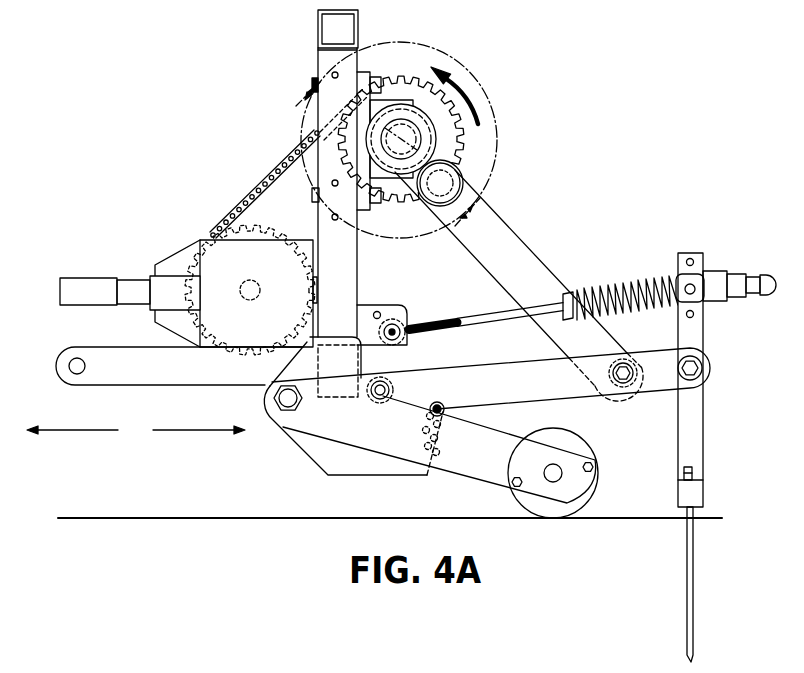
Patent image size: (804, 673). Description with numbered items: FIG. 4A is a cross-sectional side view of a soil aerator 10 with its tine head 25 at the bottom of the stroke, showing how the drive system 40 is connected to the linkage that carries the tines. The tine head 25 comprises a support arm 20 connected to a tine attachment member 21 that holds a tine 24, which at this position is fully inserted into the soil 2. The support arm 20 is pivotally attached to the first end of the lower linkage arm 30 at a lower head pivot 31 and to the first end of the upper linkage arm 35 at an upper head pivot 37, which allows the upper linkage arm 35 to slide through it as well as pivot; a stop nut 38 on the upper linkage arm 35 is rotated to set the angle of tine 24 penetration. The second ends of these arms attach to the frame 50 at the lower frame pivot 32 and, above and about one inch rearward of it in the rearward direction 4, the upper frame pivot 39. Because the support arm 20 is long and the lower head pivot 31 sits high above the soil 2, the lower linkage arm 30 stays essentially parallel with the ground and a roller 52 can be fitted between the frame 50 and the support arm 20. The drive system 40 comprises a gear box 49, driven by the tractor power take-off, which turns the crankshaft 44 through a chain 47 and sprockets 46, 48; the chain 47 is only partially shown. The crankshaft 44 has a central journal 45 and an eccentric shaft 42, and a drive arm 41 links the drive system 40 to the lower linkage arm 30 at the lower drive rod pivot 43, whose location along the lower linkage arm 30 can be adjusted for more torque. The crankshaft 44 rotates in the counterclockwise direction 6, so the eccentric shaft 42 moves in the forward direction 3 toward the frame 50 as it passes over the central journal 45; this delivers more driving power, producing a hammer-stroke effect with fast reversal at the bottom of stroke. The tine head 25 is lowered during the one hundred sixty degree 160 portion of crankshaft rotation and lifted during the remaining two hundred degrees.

The soil 2 is at (672, 572).
The forward direction 3 is at (72, 430).
The rearward horizontal direction 4 is at (200, 430).
The counterclockwise direction 6 is at (467, 85).
The soil aerator 10 is at (148, 110).
The support arm 20 is at (690, 447).
The tine attachment member 21 is at (695, 488).
The tine 24 is at (695, 603).
The tine head 25 is at (698, 440).
The lower linkage arm 30 is at (518, 388).
The lower head pivot 31 is at (708, 367).
The lower frame pivot 32 is at (383, 377).
The upper linkage arm 35 is at (518, 312).
The upper head pivot 37 is at (678, 273).
The stop nut 38 is at (738, 280).
The upper frame pivot 39 is at (393, 320).
The drive system 40 is at (260, 140).
The drive arm 41 is at (502, 240).
The eccentric shaft 42 is at (462, 170).
The lower drive rod pivot 43 is at (635, 386).
The crankshaft 44 is at (445, 148).
The central journal 45 is at (412, 128).
The sprocket 46 is at (407, 95).
The chain 47 is at (270, 177).
The sprocket 48 is at (250, 230).
The gear box 49 is at (185, 250).
The frame 50 is at (332, 62).
The roller 52 is at (533, 505).
The crankshaft rotation angle for lowering 160 is at (396, 149).